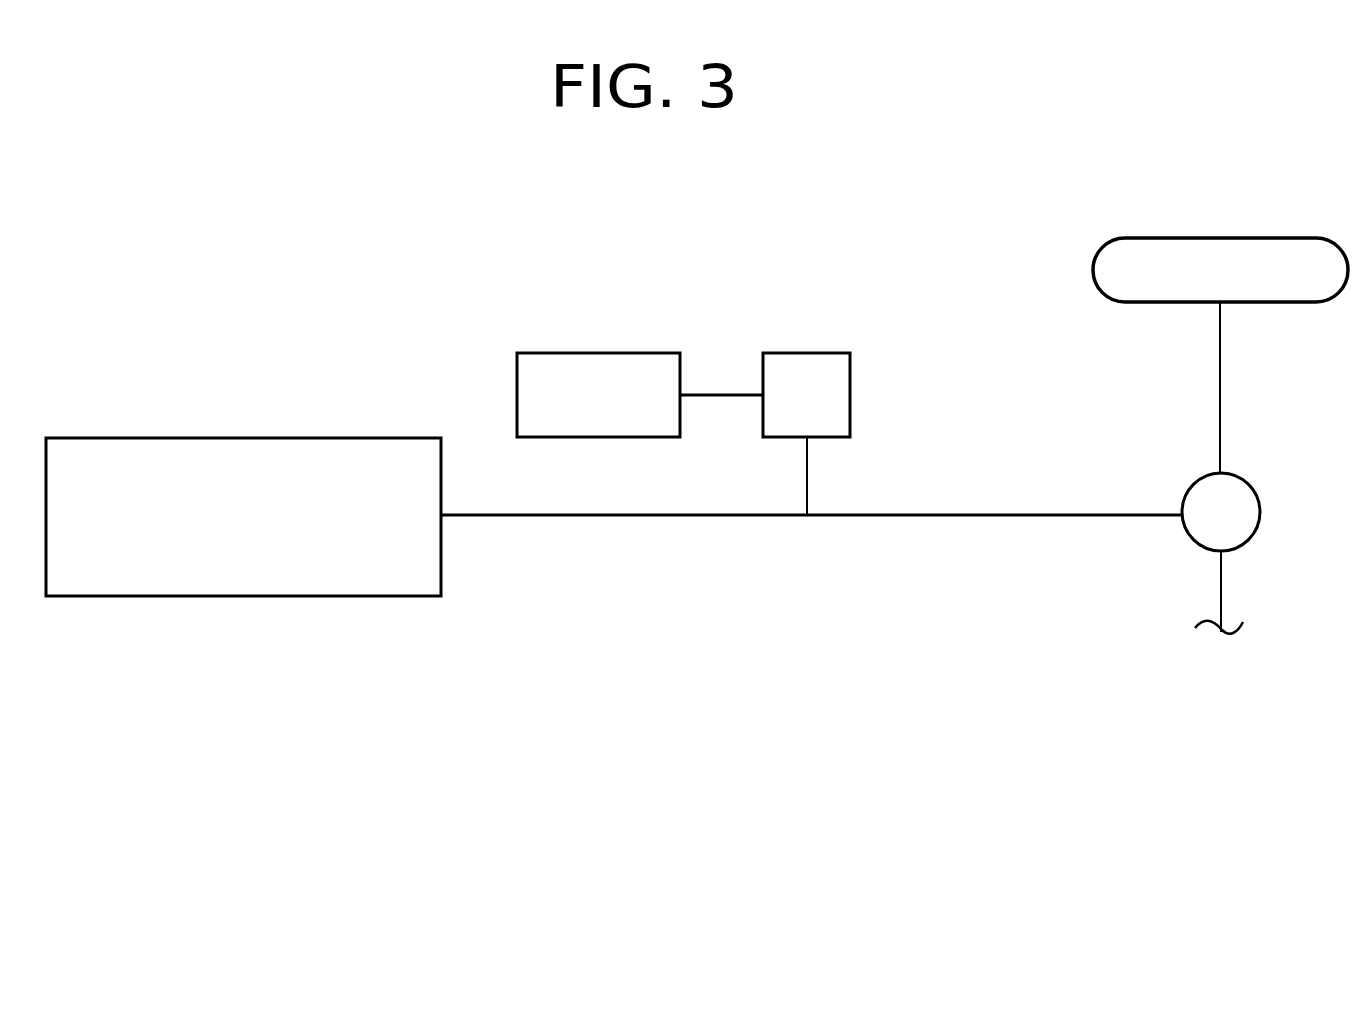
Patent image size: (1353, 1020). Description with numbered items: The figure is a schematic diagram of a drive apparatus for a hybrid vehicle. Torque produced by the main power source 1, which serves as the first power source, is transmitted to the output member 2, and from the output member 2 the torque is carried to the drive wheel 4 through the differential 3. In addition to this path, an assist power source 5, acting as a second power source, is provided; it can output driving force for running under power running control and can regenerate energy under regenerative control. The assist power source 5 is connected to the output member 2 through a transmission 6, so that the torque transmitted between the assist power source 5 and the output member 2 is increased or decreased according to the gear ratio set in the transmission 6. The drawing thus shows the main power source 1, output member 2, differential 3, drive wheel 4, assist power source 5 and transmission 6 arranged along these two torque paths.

The main power source 1 is at (320, 598).
The output member 2 is at (838, 516).
The differential 3 is at (1257, 530).
The drive wheel 4 is at (1307, 238).
The assist power source 5 is at (574, 352).
The transmission 6 is at (826, 352).